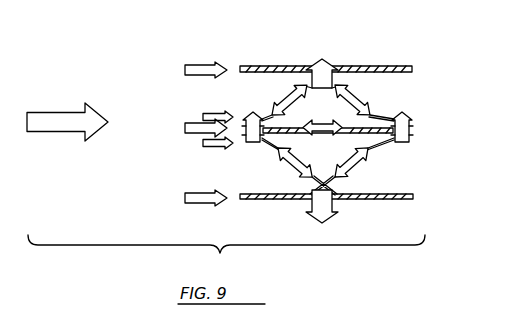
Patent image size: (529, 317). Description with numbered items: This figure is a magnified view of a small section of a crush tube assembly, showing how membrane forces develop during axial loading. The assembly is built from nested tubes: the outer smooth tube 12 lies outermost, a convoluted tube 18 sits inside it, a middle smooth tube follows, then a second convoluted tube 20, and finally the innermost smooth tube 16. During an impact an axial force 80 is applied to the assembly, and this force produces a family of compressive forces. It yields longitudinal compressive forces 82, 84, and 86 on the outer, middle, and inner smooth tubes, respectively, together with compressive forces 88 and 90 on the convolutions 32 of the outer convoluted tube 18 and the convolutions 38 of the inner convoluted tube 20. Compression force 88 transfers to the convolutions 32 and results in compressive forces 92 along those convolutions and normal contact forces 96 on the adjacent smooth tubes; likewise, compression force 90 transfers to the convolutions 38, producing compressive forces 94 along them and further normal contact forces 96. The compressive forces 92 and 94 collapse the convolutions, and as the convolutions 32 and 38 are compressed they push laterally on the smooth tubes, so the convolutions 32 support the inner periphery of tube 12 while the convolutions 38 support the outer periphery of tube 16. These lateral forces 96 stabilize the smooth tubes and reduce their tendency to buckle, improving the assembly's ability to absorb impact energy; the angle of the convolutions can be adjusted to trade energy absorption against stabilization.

The outer smooth tube 12 is at (392, 66).
The smooth tube 16 is at (405, 201).
The convoluted tube 18 is at (413, 122).
The convoluted tube 20 is at (413, 140).
The convolutions 32 is at (306, 86).
The convolutions 38 is at (386, 143).
The axial force 80 is at (52, 112).
The longitudinal compressive force 82 is at (208, 63).
The longitudinal compressive force 84 is at (185, 124).
The longitudinal compressive force 86 is at (187, 192).
The compressive force 88 is at (211, 112).
The compressive force 90 is at (212, 150).
The compressive forces 92 is at (288, 100).
The compressive forces 94 is at (297, 165).
The normal contact forces 96 is at (327, 61).